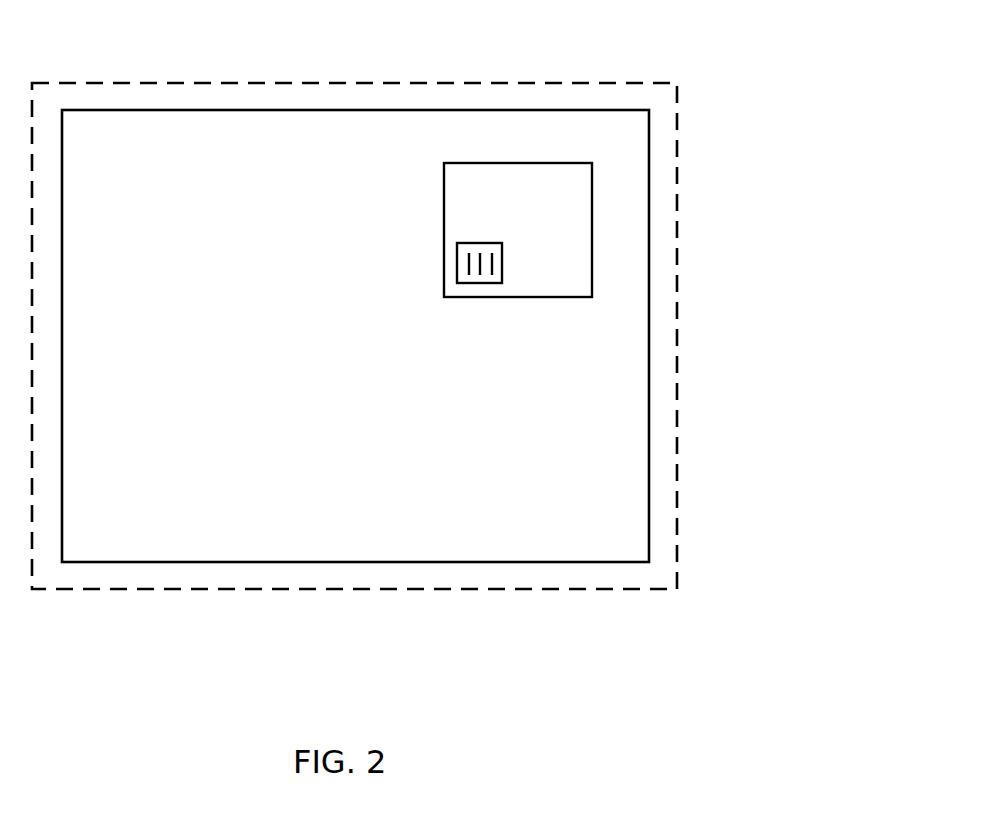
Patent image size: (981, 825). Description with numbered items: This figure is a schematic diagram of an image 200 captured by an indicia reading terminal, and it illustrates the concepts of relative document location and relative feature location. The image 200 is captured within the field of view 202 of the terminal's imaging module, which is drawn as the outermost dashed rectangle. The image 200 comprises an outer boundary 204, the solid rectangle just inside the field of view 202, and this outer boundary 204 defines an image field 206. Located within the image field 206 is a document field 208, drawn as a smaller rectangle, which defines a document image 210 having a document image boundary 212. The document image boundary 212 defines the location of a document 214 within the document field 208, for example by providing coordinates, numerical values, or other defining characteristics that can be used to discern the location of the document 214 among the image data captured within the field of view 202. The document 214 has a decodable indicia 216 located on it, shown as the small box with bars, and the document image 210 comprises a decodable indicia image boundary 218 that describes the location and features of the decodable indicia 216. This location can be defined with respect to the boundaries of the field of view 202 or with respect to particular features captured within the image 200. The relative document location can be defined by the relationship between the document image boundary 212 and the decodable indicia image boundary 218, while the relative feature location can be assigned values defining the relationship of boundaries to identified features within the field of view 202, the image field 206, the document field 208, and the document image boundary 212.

The image 200 is at (718, 62).
The field of view 202 is at (678, 422).
The outer boundary 204 is at (650, 375).
The image field 206 is at (244, 167).
The document field 208 is at (540, 142).
The document image 210 is at (593, 217).
The document image boundary 212 is at (443, 256).
The document 214 is at (547, 283).
The decodable indicia 216 is at (478, 293).
The decodable indicia image boundary 218 is at (482, 243).